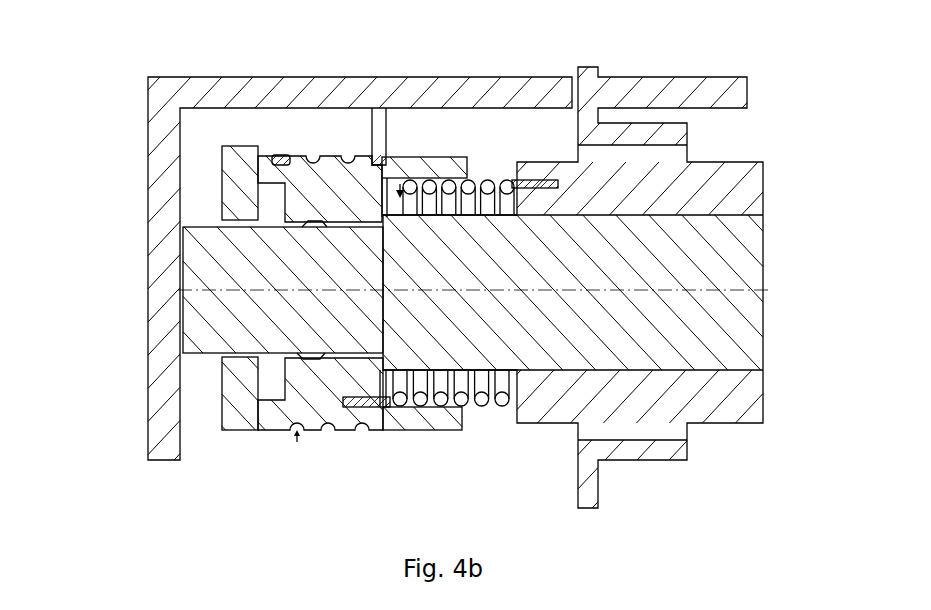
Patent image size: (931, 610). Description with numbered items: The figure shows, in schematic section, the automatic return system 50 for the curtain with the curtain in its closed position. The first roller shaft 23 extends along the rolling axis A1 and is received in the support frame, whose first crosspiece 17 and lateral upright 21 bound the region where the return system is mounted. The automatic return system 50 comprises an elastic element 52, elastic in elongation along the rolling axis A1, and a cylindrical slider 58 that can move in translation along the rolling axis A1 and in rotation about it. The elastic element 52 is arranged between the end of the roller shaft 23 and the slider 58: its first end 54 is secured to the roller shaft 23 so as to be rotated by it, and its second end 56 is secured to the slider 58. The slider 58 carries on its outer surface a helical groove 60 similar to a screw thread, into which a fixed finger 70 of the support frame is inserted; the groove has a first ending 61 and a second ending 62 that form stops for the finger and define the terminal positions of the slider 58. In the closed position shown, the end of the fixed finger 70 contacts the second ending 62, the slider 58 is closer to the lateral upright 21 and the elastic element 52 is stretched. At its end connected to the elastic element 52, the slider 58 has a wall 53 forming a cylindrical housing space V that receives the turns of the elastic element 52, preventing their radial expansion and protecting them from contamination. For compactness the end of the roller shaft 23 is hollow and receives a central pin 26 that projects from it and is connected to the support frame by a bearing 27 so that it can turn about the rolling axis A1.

The first crosspiece 17 is at (213, 94).
The lateral upright 21 is at (163, 309).
The first roller shaft 23 is at (752, 157).
The central pin 26 is at (540, 350).
The bearing 27 is at (247, 432).
The automatic return system 50 is at (392, 500).
The elastic element 52 is at (442, 408).
The wall 53 is at (462, 407).
The first end 54 is at (523, 178).
The second end 56 is at (380, 431).
The cylindrical slider 58 is at (410, 418).
The helical groove 60 is at (297, 444).
The first ending 61 is at (287, 152).
The second ending 62 is at (402, 180).
The fixed finger 70 is at (378, 120).
The cylindrical housing space V is at (413, 173).
The rolling axis A1 is at (491, 290).